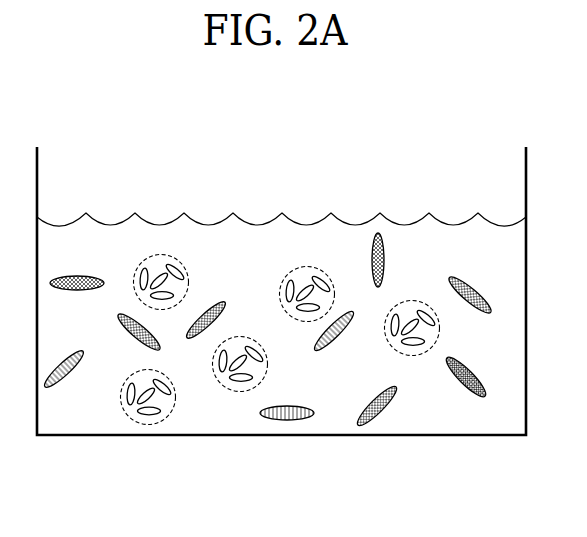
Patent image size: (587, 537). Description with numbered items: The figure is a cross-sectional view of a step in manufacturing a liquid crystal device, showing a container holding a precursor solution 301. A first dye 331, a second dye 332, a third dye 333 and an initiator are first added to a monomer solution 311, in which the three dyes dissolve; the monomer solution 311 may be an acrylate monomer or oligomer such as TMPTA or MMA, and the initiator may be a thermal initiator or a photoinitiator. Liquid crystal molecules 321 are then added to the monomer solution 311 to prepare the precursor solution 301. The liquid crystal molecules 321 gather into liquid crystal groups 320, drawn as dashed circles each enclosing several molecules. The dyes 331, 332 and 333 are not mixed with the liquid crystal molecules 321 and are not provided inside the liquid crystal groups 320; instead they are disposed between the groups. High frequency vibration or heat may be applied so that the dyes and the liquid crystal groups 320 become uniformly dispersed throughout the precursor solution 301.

The precursor solution 301 is at (475, 92).
The monomer solution 311 is at (94, 421).
The liquid crystal group 320 is at (176, 403).
The liquid crystal molecule 321 is at (147, 413).
The first dye 331 is at (283, 420).
The second dye 332 is at (383, 410).
The third dye 333 is at (458, 377).